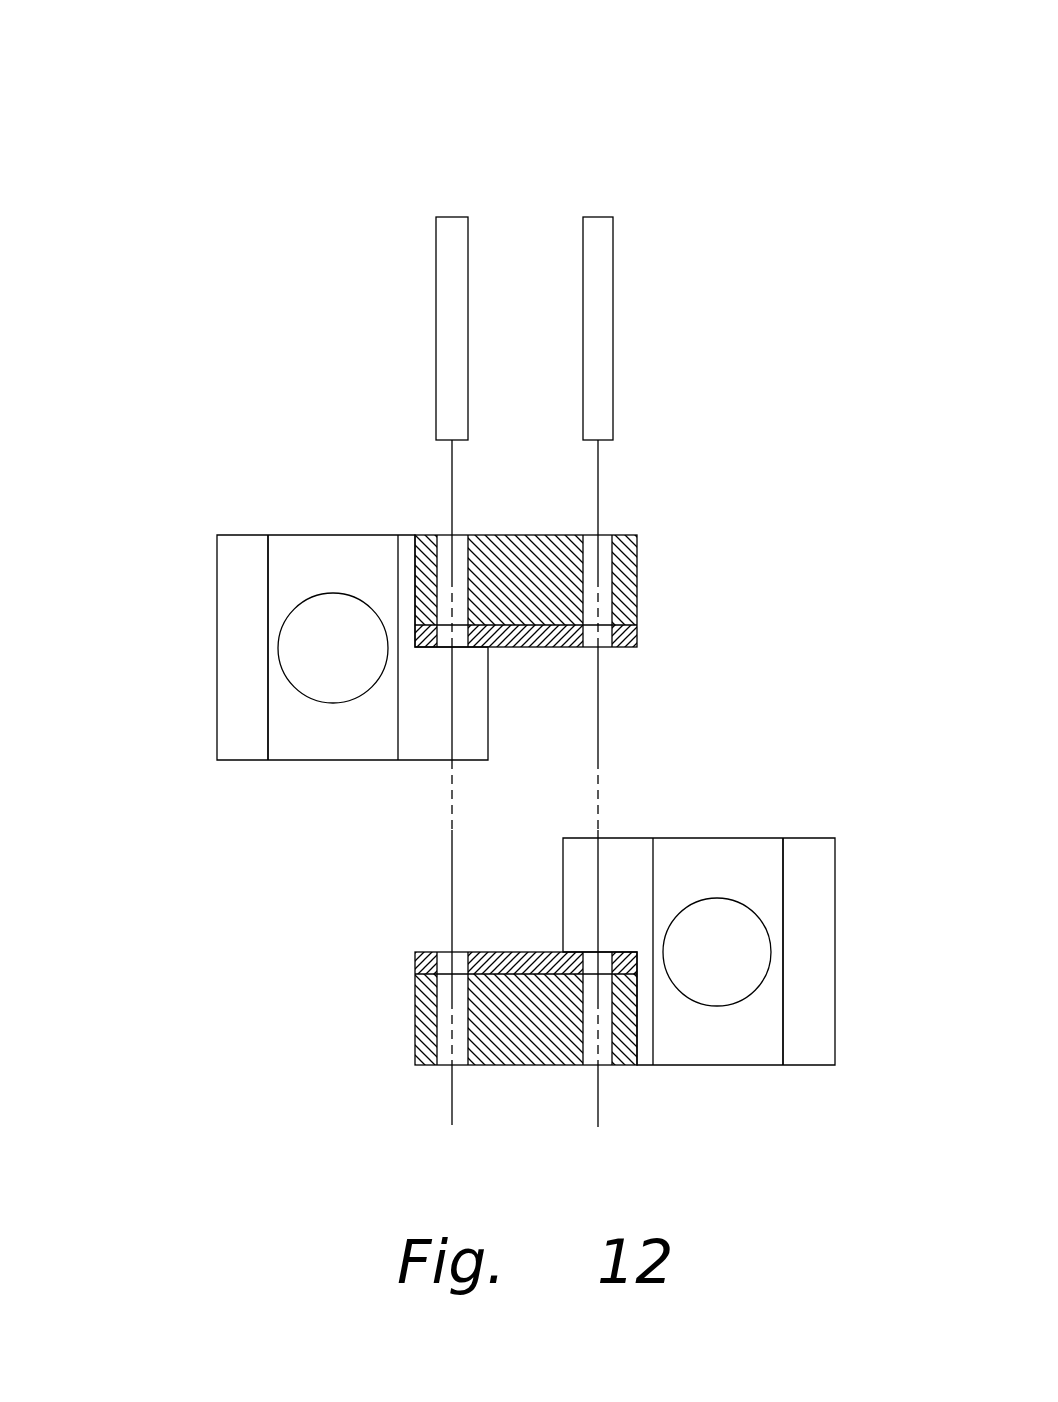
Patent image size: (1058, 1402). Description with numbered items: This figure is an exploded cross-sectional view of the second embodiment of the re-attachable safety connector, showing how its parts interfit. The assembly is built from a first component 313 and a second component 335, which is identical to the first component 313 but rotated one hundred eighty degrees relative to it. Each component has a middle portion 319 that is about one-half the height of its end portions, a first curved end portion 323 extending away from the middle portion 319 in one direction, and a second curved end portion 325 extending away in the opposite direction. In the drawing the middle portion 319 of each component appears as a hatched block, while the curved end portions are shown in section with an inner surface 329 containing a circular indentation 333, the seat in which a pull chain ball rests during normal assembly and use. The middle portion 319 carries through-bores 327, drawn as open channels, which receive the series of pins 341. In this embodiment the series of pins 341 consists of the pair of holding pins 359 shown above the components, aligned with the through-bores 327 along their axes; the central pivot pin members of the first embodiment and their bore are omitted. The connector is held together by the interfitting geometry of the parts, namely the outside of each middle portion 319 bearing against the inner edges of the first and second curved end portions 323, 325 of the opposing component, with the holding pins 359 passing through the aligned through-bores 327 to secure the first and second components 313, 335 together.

The first component 313 is at (180, 648).
The middle portion 319 is at (417, 660).
The first curved end portion 323 is at (497, 782).
The second curved end portion 325 is at (557, 818).
The through-bores 327 is at (460, 543).
The inner surface 329 is at (282, 548).
The indentation 333 is at (330, 612).
The second component 335 is at (370, 1012).
The series of pins 341 is at (413, 97).
The holding pins 359 is at (455, 217).